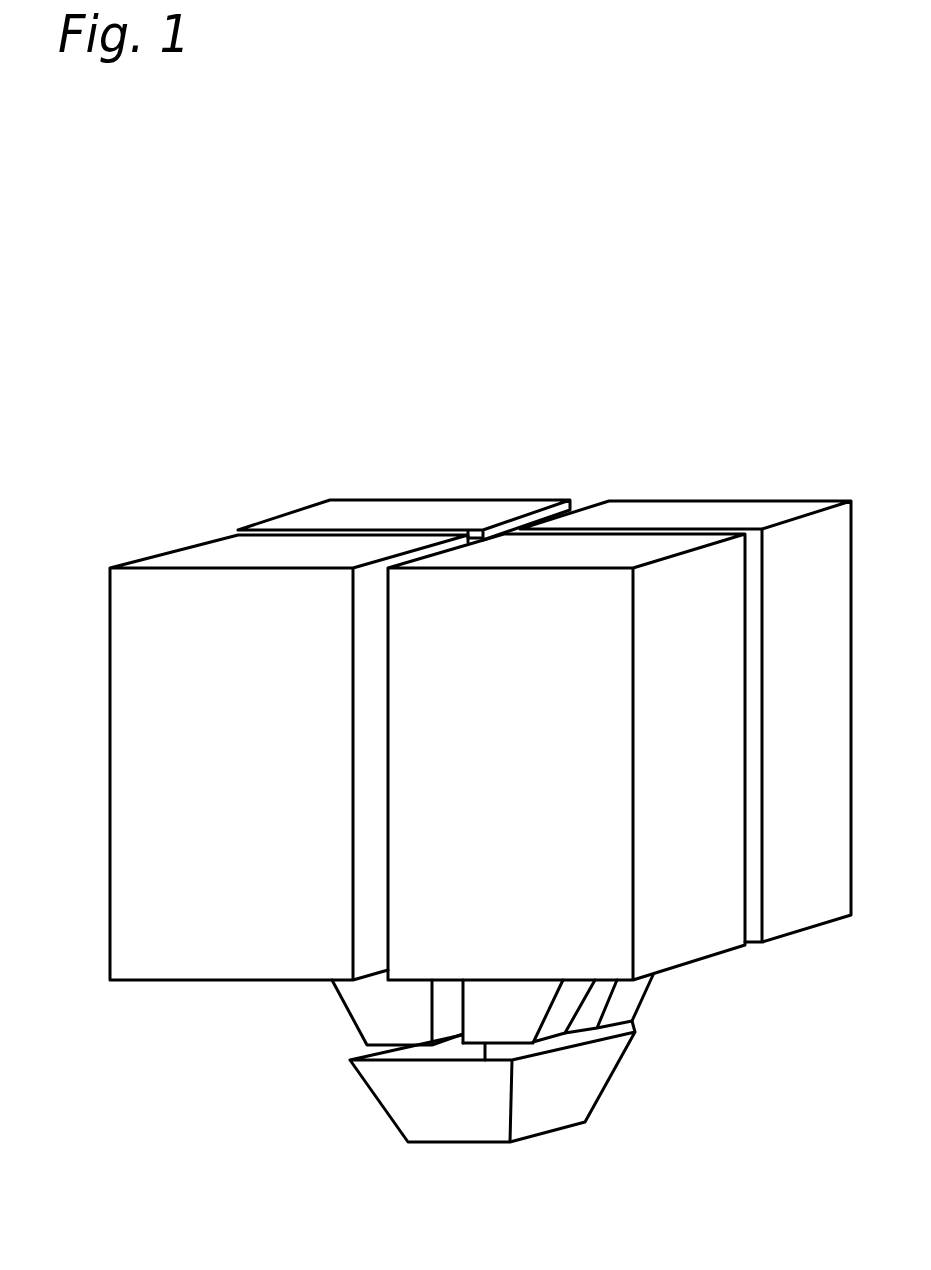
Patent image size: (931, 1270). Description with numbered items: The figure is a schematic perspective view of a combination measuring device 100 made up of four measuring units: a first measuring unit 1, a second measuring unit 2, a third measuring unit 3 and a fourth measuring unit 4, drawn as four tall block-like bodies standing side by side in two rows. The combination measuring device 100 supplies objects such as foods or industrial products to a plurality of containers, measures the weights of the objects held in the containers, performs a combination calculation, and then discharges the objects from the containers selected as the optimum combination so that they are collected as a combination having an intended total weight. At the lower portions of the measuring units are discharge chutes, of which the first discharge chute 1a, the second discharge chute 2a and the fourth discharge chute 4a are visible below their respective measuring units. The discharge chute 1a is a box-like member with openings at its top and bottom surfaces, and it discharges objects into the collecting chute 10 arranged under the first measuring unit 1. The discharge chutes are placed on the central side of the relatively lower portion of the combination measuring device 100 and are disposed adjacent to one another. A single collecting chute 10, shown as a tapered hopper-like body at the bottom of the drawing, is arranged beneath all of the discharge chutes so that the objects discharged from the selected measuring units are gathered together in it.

The combination measuring device 100 is at (680, 339).
The first measuring unit 1 is at (697, 940).
The second measuring unit 2 is at (203, 547).
The third measuring unit 3 is at (418, 513).
The fourth measuring unit 4 is at (698, 513).
The first discharge chute 1a is at (503, 997).
The second discharge chute 2a is at (367, 1010).
The fourth discharge chute 4a is at (622, 997).
The collecting chute 10 is at (557, 1102).